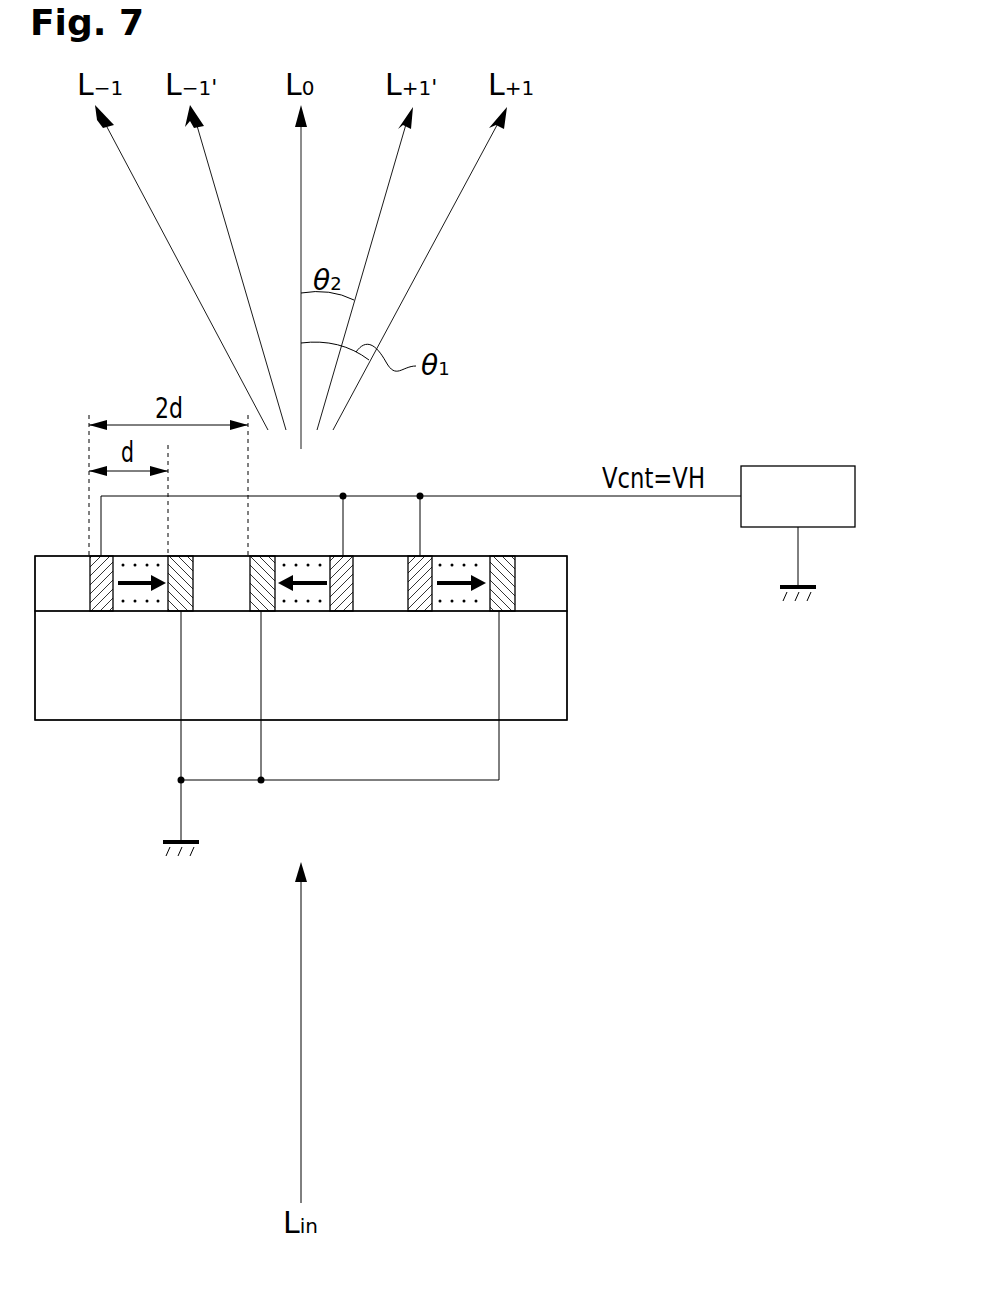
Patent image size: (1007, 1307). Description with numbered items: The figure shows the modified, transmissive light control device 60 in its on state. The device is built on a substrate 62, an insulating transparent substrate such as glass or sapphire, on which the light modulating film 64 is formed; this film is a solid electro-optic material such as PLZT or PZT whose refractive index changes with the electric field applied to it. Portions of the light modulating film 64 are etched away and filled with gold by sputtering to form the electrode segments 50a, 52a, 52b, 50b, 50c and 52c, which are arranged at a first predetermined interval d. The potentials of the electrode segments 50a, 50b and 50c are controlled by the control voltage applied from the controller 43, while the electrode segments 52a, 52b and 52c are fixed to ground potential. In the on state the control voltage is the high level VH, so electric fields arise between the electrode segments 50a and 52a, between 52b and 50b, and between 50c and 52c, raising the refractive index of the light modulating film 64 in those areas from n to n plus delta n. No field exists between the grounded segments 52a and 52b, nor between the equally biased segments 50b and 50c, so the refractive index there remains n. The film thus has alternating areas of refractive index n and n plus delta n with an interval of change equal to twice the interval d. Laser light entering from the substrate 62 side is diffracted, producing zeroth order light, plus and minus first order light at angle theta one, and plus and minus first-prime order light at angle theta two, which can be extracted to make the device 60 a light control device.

The controller 43 is at (803, 466).
The electrode segment 50a is at (102, 612).
The electrode segment 50b is at (332, 555).
The electrode segment 50c is at (423, 555).
The electrode segment 52a is at (187, 612).
The electrode segment 52b is at (270, 612).
The electrode segment 52c is at (497, 612).
The light control device 60 is at (549, 731).
The substrate 62 is at (553, 665).
The light modulating film 64 is at (553, 582).